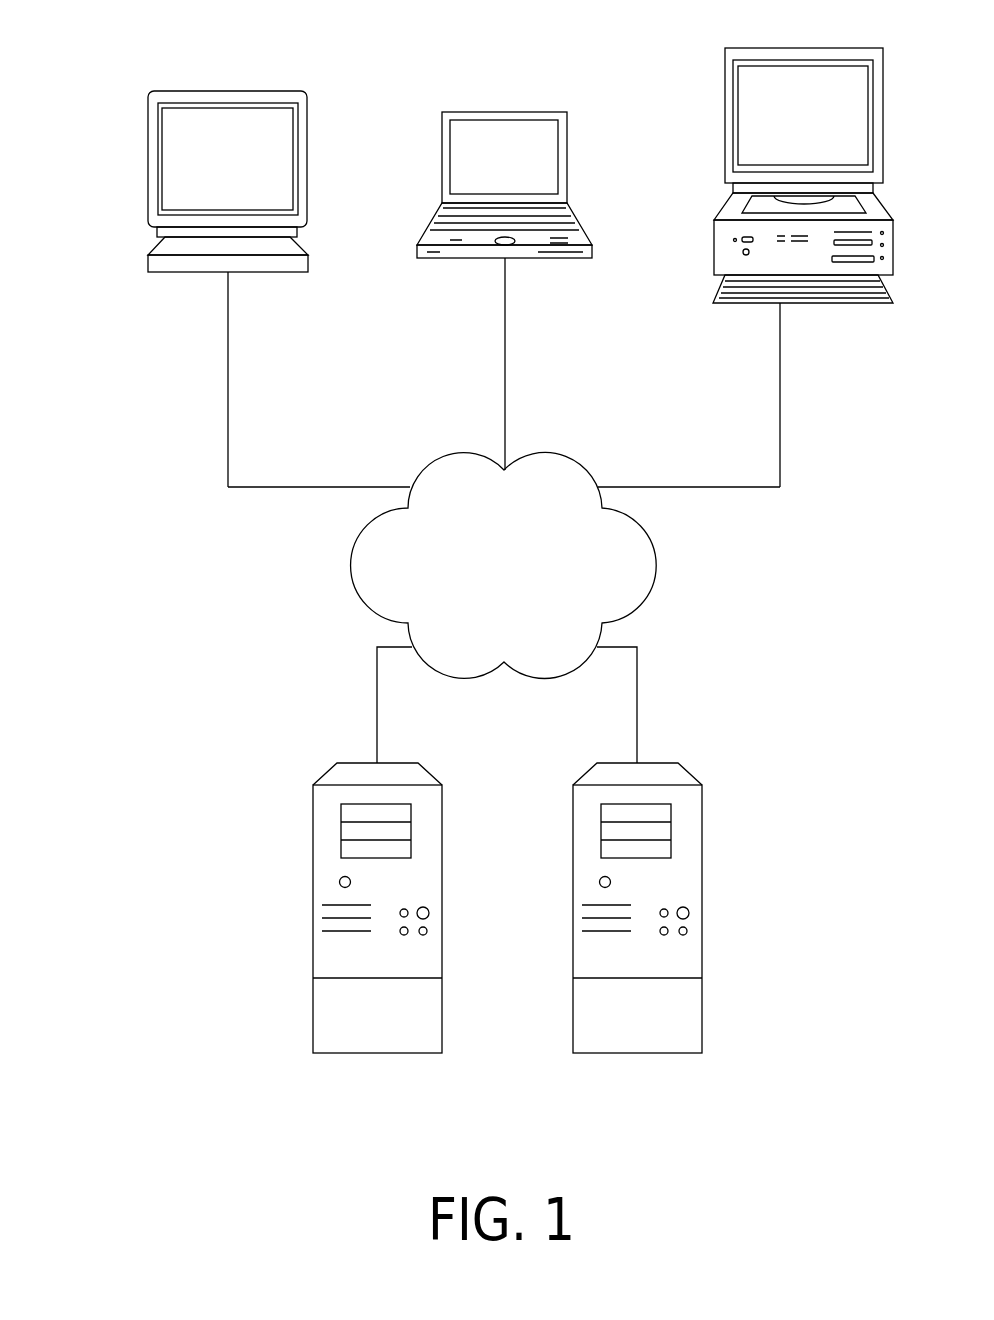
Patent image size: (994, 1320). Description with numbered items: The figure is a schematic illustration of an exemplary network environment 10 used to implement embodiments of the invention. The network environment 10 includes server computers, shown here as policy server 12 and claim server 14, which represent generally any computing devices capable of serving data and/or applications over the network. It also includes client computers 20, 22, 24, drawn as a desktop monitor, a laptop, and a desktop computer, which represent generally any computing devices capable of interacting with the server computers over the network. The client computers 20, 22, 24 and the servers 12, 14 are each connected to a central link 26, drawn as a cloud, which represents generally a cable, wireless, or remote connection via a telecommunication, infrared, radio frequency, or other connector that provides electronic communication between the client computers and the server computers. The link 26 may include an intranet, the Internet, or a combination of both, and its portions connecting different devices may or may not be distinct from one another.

The network environment 10 is at (78, 88).
The policy server 12 is at (398, 772).
The claim server 14 is at (658, 772).
The client computer 20 is at (206, 98).
The client computer 22 is at (483, 118).
The client computer 24 is at (781, 54).
The link 26 is at (553, 470).